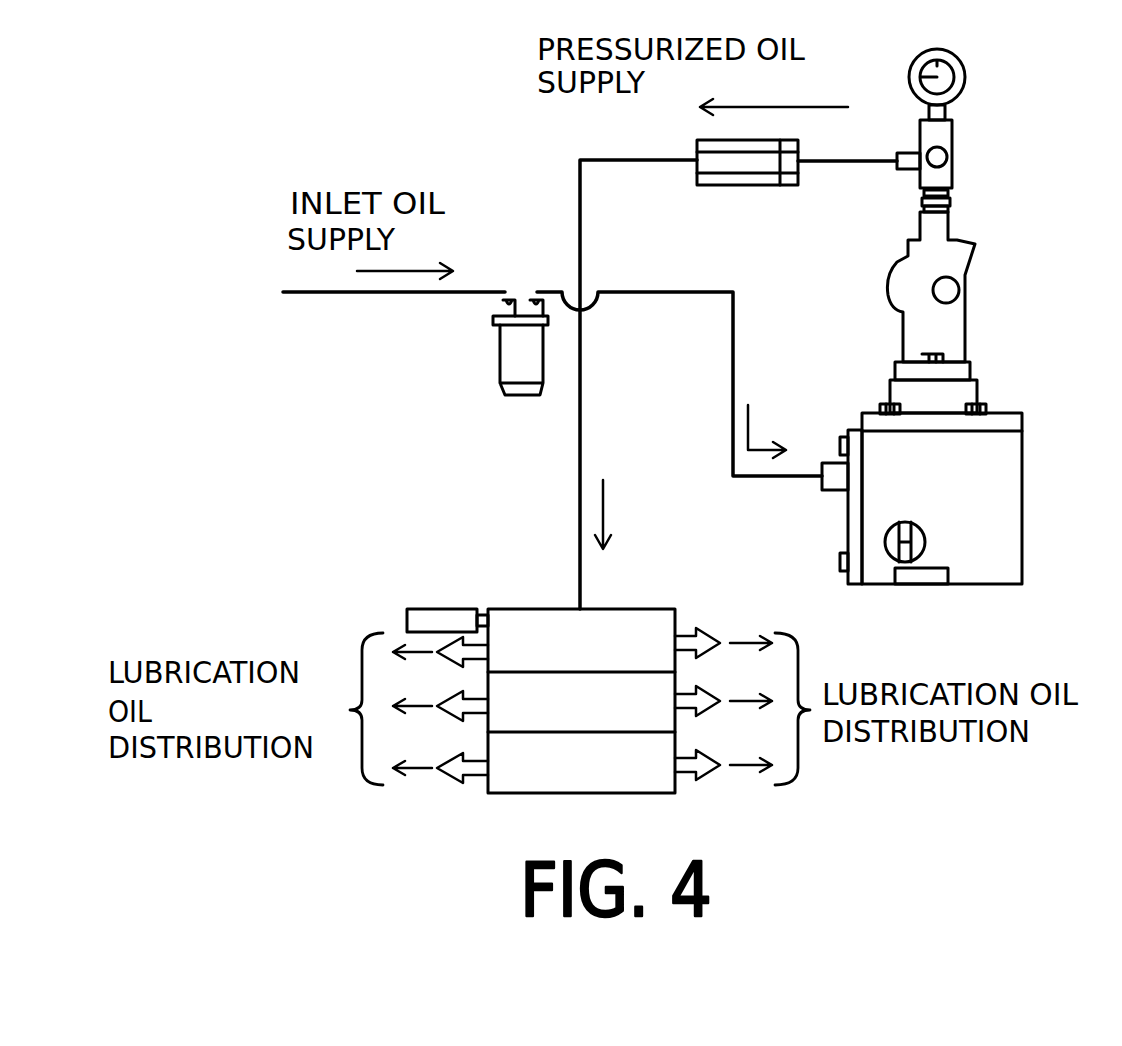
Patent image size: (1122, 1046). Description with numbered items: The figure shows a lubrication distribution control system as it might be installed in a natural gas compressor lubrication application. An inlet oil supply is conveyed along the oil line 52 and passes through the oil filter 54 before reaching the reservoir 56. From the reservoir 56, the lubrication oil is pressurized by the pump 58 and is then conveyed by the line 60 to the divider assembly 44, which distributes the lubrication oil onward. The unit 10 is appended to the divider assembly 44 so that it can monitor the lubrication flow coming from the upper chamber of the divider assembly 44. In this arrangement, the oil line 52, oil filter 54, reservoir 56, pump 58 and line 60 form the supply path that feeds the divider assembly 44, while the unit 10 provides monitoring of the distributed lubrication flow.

The unit 10 is at (440, 609).
The divider assembly 44 is at (652, 795).
The oil line 52 is at (310, 294).
The oil filter 54 is at (500, 362).
The reservoir 56 is at (1022, 472).
The pump 58 is at (948, 228).
The line 60 is at (598, 158).